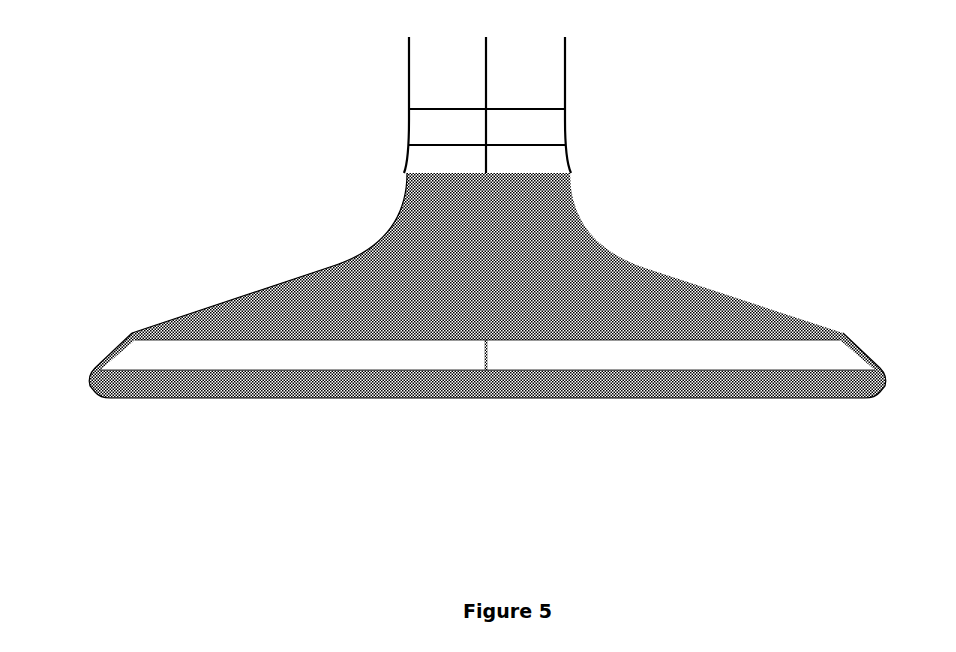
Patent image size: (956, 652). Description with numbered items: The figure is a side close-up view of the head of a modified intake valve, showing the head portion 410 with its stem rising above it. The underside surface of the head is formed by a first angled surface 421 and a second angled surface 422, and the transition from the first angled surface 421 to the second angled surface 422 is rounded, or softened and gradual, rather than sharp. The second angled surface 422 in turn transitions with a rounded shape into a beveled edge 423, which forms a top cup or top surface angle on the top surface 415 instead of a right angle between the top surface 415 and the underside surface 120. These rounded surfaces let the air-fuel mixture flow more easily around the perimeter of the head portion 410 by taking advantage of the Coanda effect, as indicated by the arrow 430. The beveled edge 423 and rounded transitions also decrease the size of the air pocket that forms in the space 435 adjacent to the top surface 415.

The underside surface 120 is at (173, 203).
The head portion 410 is at (612, 129).
The top surface 415 is at (295, 397).
The first angled surface 421 is at (72, 295).
The second angled surface 422 is at (125, 317).
The beveled edge 423 is at (105, 412).
The arrow 430 is at (707, 502).
The space 435 is at (500, 464).